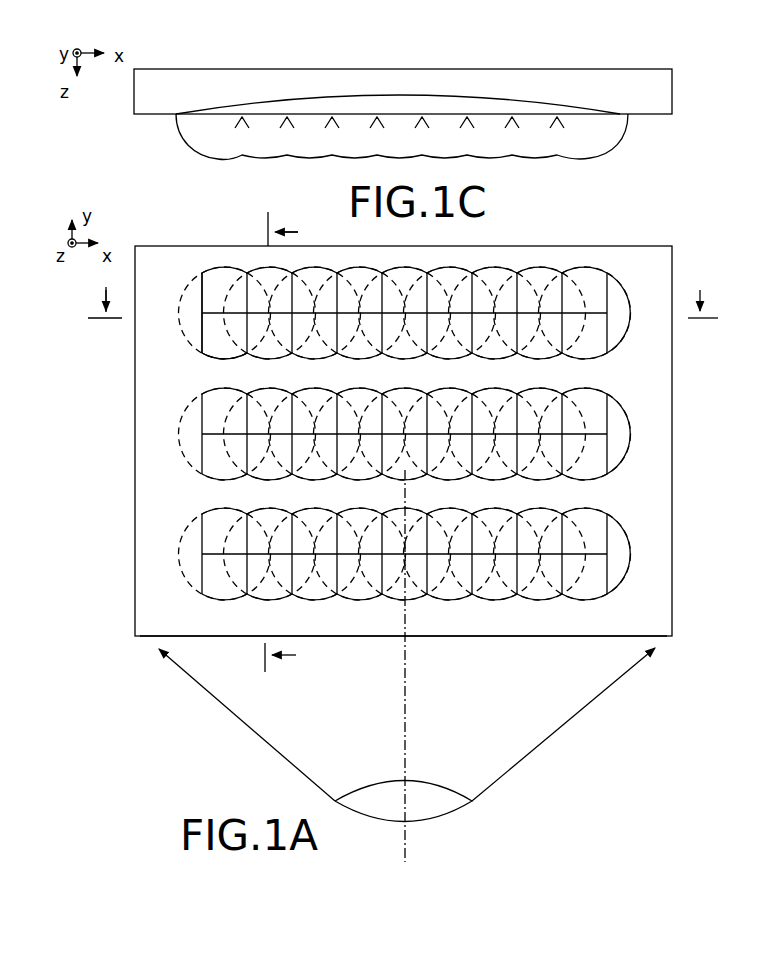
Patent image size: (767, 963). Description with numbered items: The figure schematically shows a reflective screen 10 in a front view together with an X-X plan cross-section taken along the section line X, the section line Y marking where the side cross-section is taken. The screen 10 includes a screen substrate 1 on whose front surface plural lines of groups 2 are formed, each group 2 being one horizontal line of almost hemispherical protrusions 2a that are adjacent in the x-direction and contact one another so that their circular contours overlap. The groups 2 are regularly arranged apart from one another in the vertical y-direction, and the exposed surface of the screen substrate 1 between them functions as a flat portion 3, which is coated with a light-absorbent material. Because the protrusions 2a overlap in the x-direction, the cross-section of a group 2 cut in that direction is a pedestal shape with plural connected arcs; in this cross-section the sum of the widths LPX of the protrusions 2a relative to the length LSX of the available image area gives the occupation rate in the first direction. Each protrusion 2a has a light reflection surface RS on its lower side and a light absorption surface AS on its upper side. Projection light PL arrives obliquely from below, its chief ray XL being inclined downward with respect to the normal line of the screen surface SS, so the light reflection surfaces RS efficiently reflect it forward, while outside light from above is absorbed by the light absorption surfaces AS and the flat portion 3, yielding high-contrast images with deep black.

In FIG. 1C, the screen 10 is at (684, 72).
In FIG. 1A, the screen 10 is at (686, 246).
In FIG. 1C, the screen substrate 1 is at (668, 103).
In FIG. 1A, the screen substrate 1 is at (672, 279).
In FIG. 1C, the group 2 is at (172, 144).
In FIG. 1A, the group 2 is at (176, 353).
In FIG. 1C, the protrusion 2a is at (288, 154).
In FIG. 1A, the protrusion 2a is at (508, 268).
In FIG. 1A, the flat portion 3 is at (574, 383).
In FIG. 1C, the length of the available area of the image LSX is at (398, 100).
In FIG. 1C, the width of a cross-section of each protrusion LPX is at (400, 137).
In FIG. 1A, the light absorption surface AS is at (228, 277).
In FIG. 1A, the light reflection surface RS is at (223, 354).
In FIG. 1A, the screen surface SS is at (657, 621).
In FIG. 1A, the projection light PL is at (573, 720).
In FIG. 1A, the chief ray XL is at (407, 705).
In FIG. 1A, the X-X plan cross-section line X is at (401, 309).
In FIG. 1A, the Y-Y side cross-section line Y is at (277, 442).